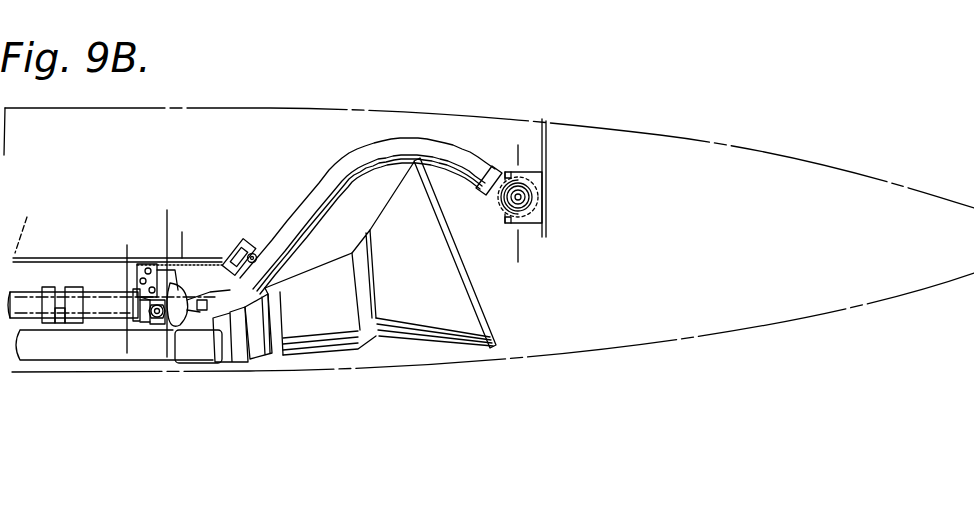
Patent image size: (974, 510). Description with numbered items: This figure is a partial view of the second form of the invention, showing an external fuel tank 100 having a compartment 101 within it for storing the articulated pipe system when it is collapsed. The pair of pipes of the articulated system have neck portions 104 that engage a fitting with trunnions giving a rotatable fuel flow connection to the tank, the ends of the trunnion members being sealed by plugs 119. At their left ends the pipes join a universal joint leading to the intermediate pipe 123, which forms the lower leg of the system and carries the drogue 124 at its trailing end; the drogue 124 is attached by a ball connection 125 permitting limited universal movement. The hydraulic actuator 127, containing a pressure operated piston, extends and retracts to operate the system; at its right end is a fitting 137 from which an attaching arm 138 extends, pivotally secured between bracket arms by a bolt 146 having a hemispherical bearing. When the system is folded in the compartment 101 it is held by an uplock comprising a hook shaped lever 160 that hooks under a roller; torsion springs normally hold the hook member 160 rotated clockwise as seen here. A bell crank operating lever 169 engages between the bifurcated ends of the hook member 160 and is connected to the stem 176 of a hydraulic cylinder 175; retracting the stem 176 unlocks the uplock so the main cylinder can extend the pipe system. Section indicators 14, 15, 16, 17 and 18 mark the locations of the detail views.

The external fuel tank 100 is at (502, 118).
The compartment 101 is at (35, 224).
The neck portions 104 is at (344, 166).
The plugs 119 is at (523, 198).
The drogue 124 is at (455, 337).
The ball connection 125 is at (243, 368).
The hydraulic actuator 127 is at (22, 288).
The fitting 137 is at (103, 292).
The attaching arm 138 is at (160, 310).
The intermediate pipe 123 is at (152, 322).
The bolt 146 is at (157, 320).
The hook shaped lever 160 is at (196, 280).
The bell crank operating lever 169 is at (178, 290).
The hydraulic cylinder 175 is at (254, 253).
The stem 176 is at (230, 252).
The section line 14- 14 is at (120, 343).
The section line 15- 15 is at (160, 350).
The section line 16- 16 is at (224, 285).
The section line 17- 17 is at (200, 298).
The section line 18- 18 is at (511, 252).